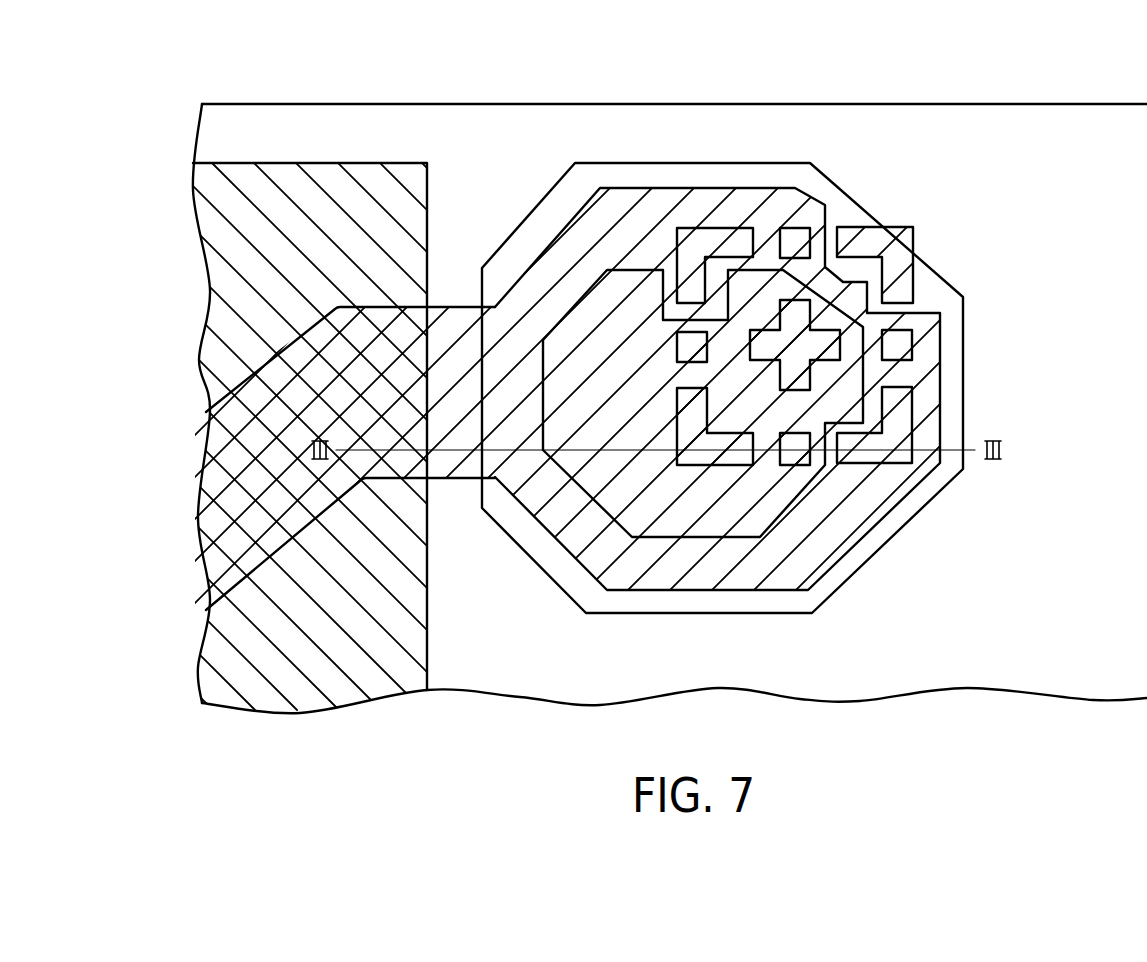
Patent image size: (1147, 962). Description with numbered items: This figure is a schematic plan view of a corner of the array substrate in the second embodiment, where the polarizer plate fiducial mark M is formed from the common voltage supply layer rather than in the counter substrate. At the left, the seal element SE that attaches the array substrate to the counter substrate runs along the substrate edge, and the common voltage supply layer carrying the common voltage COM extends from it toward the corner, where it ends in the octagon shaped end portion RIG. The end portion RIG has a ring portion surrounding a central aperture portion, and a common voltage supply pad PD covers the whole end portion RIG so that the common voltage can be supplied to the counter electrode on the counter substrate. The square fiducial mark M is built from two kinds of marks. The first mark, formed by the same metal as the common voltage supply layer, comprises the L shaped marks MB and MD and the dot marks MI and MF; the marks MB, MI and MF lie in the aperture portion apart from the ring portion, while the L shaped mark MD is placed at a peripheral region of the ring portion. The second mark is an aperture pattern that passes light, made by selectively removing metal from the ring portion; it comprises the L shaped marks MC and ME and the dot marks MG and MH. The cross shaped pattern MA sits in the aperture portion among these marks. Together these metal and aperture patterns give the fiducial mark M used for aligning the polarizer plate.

The seal element SE is at (243, 175).
The common voltage COM is at (336, 360).
The common voltage supply pad PD is at (838, 181).
The polarizer plate fiducial mark M is at (923, 293).
The L shaped mark MC is at (688, 243).
The dot mark MG is at (793, 243).
The L shaped mark MD is at (897, 252).
The dot mark MH is at (905, 345).
The metal portion MA (M1 layer) MA is at (825, 350).
The L shaped mark ME is at (900, 407).
The dot mark MF is at (677, 338).
The L shaped mark MB is at (692, 455).
The dot mark MI is at (797, 452).
The octagon shaped end portion RIG is at (912, 537).